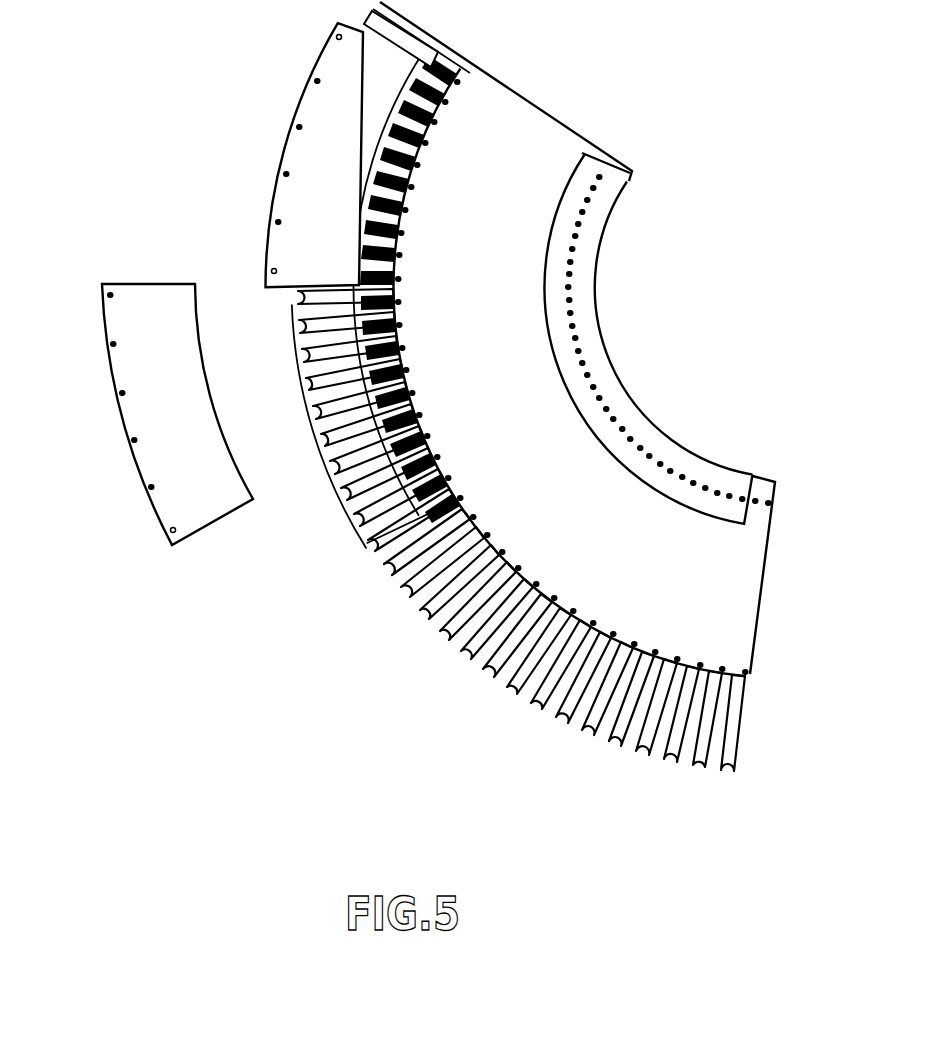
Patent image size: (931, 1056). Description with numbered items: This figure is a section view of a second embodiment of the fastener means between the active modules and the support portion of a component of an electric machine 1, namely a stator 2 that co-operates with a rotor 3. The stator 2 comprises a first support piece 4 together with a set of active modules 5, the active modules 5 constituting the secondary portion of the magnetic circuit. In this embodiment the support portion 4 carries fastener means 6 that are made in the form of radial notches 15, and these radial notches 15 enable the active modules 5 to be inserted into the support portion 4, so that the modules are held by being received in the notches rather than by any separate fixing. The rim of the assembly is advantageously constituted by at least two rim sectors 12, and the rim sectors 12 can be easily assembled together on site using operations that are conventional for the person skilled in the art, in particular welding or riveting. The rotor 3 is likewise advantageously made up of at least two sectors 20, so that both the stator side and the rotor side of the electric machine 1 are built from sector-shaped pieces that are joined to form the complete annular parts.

The electric machine 1 is at (562, 399).
The stator 2 is at (513, 108).
The rotor 3 is at (130, 450).
The first support piece 4 is at (632, 385).
The active modules 5 is at (367, 540).
The fastener means 6 is at (478, 483).
The rim sectors 12 is at (748, 598).
The radial notches 15 is at (503, 680).
The sectors 20 is at (290, 128).